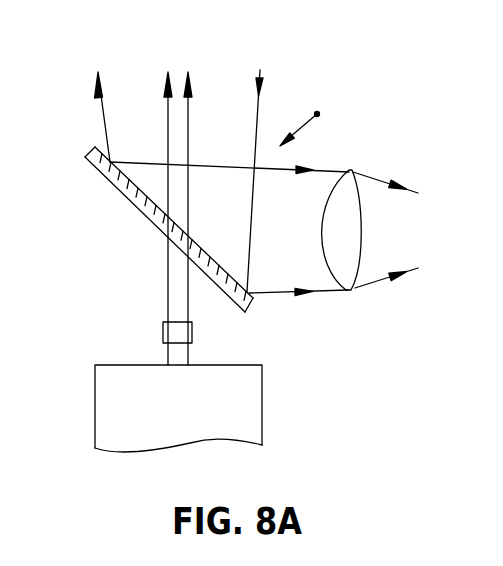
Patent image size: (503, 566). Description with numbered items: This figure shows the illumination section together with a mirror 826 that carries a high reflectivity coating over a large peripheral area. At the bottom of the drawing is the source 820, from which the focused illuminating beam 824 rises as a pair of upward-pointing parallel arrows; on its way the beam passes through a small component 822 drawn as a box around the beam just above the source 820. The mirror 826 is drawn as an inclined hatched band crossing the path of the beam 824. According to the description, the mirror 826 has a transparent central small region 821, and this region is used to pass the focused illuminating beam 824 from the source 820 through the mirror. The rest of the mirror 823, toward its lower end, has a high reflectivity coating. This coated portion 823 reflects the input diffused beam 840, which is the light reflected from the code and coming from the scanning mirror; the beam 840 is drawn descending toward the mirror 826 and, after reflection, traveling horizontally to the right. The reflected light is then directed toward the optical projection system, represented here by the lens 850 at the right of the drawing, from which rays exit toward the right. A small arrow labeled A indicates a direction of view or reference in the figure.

The light source / laser unit 820 is at (245, 410).
The collimator / aperture 822 is at (163, 333).
The light beam 824 is at (168, 279).
The mirror 821 is at (180, 228).
The mirror back surface / reflected beam 826 is at (103, 175).
The mirror end portion 823 is at (255, 300).
The incident light beam 840 is at (260, 70).
The lens 850 is at (349, 170).
The viewing direction A is at (300, 113).